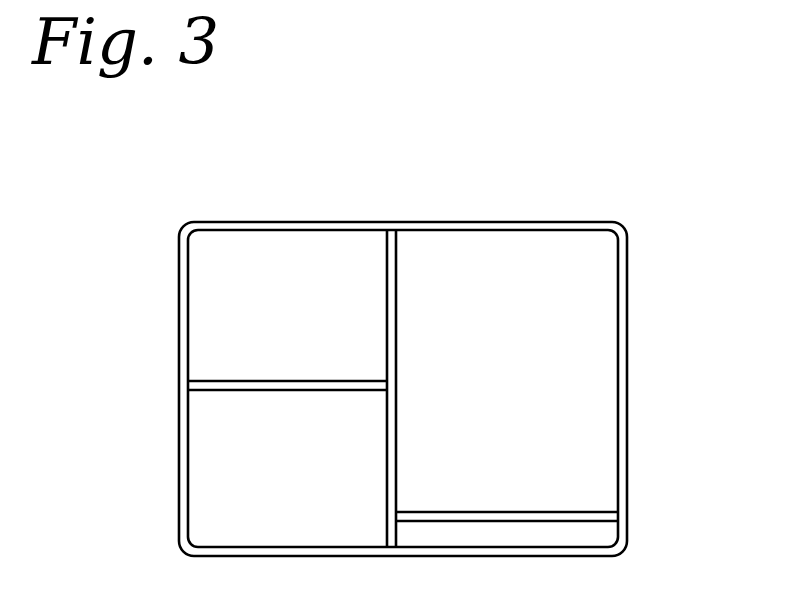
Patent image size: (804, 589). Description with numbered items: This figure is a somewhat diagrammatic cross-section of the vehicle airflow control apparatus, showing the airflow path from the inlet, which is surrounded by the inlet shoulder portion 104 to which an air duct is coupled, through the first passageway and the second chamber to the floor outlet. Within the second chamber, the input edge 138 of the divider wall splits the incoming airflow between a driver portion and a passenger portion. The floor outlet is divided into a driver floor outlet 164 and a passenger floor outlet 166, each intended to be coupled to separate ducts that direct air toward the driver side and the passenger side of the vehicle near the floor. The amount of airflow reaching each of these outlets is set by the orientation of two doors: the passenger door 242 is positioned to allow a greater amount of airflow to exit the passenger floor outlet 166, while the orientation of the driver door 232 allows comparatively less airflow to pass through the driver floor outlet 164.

The inlet shoulder portion 104 is at (627, 345).
The input edge 138 is at (393, 243).
The passenger door 242 is at (270, 247).
The passenger floor outlet 166 is at (212, 447).
The driver door 232 is at (525, 238).
The driver floor outlet 164 is at (607, 528).